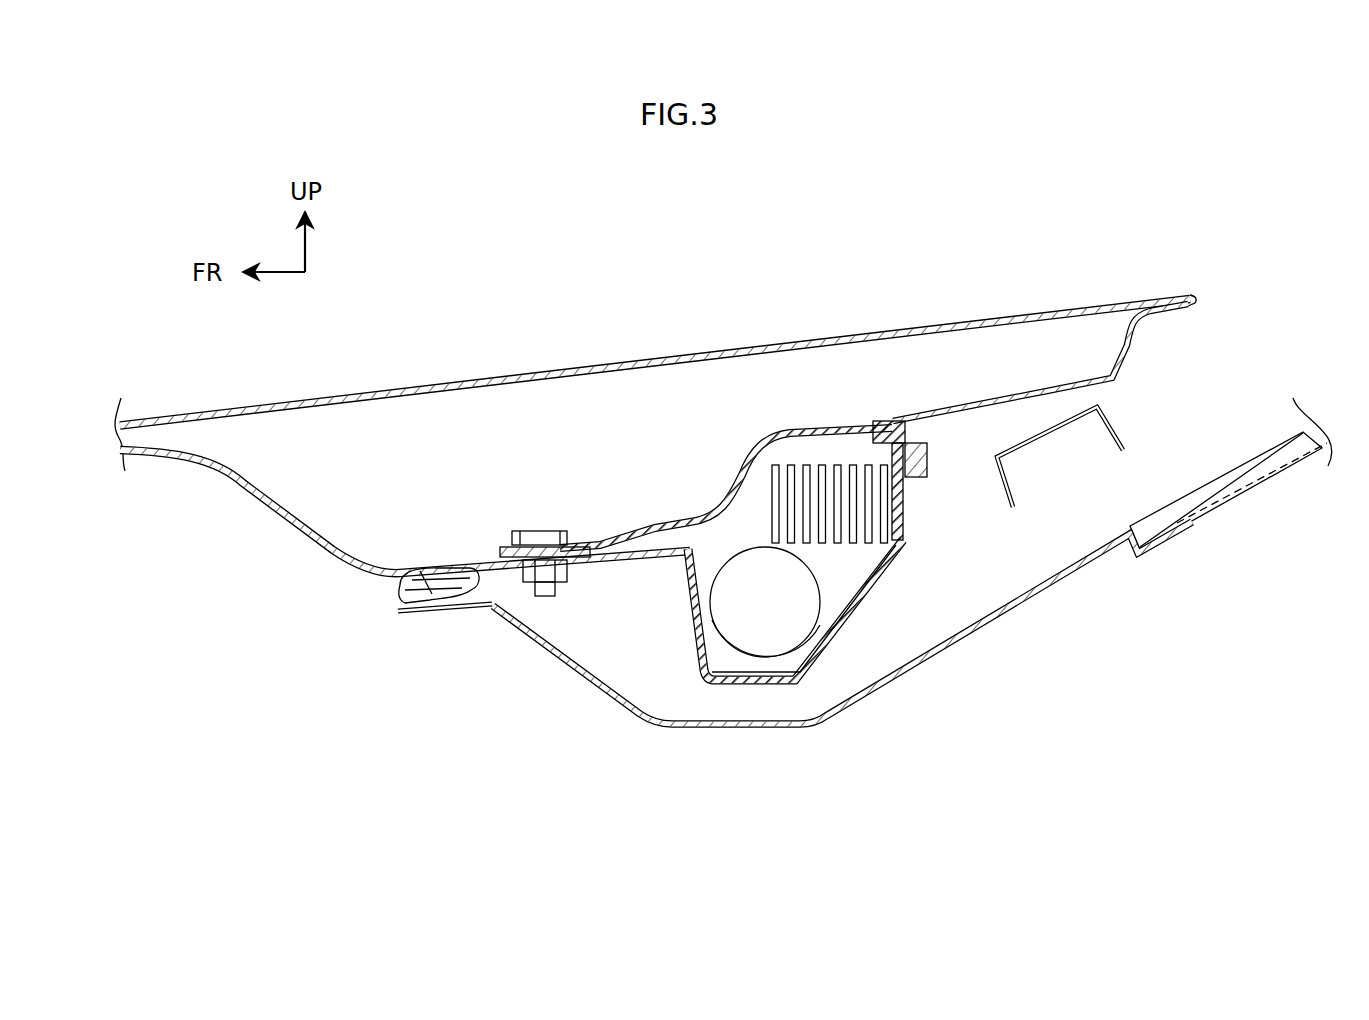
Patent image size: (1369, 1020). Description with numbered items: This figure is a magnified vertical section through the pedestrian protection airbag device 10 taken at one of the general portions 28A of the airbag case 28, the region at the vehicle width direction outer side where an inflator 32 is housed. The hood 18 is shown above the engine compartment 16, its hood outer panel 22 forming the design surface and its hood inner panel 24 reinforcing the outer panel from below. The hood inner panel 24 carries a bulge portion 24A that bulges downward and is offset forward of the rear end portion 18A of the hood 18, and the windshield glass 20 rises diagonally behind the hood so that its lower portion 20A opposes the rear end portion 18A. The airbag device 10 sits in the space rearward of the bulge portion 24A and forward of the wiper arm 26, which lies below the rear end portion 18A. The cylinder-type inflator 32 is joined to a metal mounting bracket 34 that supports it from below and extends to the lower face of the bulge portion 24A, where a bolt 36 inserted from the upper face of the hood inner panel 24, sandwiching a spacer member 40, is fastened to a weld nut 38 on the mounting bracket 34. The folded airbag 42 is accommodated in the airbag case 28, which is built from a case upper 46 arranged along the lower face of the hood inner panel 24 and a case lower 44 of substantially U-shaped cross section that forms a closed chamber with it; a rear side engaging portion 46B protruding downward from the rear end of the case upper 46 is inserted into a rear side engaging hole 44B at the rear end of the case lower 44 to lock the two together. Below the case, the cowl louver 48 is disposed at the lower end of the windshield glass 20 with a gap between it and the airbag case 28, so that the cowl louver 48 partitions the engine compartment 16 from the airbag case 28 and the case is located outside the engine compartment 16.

The pedestrian protection airbag device 10 is at (873, 665).
The engine compartment 16 is at (842, 669).
The hood 18 is at (658, 478).
The rear end portion of the hood 18A is at (970, 320).
The windshield glass 20 is at (1253, 450).
The lower portion of the windshield glass 20A is at (1203, 483).
The hood outer panel 22 is at (503, 375).
The hood inner panel 24 is at (255, 493).
The bulge portion 24A is at (490, 606).
The wiper arm 26 is at (1123, 430).
The airbag case 28 is at (842, 669).
The general portions of the airbag case 28A is at (817, 680).
The inflator 32 is at (820, 577).
The mounting bracket 34 is at (730, 660).
The bolt 36 is at (525, 530).
The weld nut 38 is at (560, 590).
The spacer member 40 is at (578, 530).
The airbag 42 is at (815, 465).
The case lower 44 is at (905, 542).
The rear side engaging hole 44B is at (897, 418).
The case upper 46 is at (740, 465).
The rear side engaging portion 46B is at (907, 467).
The cowl louver 48 is at (1000, 615).